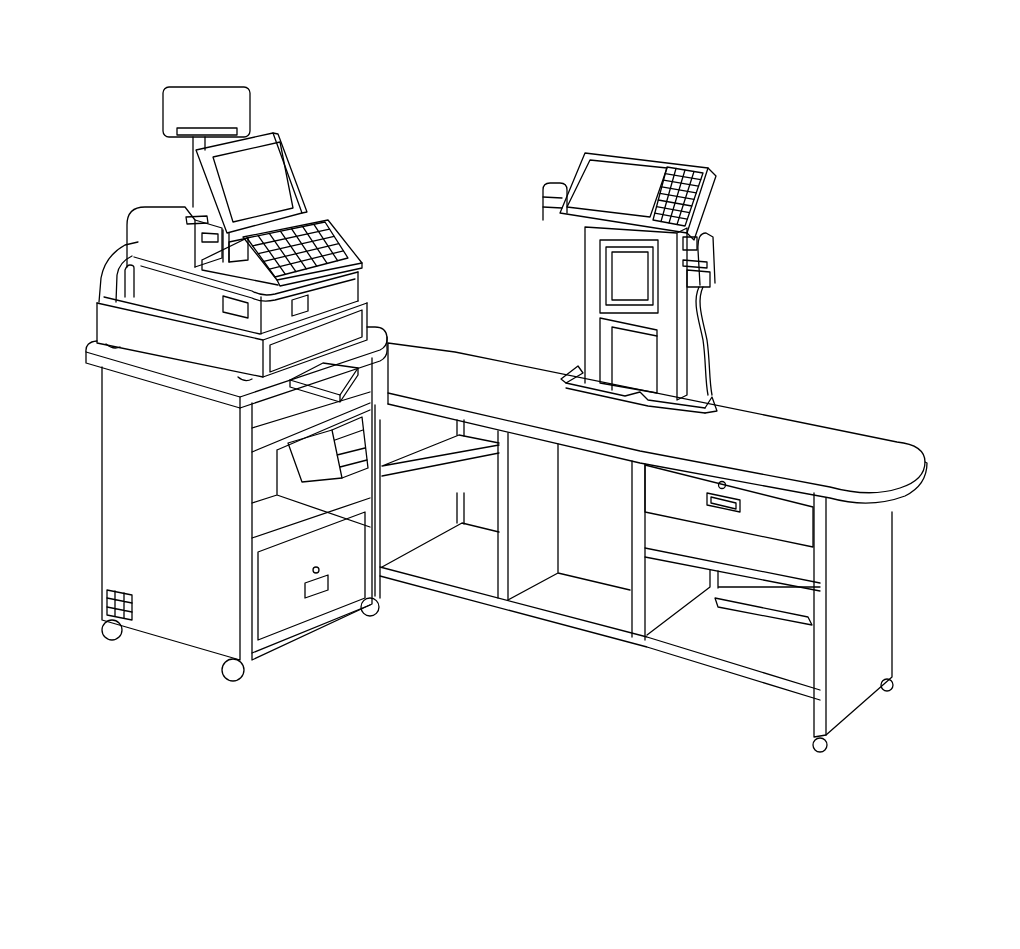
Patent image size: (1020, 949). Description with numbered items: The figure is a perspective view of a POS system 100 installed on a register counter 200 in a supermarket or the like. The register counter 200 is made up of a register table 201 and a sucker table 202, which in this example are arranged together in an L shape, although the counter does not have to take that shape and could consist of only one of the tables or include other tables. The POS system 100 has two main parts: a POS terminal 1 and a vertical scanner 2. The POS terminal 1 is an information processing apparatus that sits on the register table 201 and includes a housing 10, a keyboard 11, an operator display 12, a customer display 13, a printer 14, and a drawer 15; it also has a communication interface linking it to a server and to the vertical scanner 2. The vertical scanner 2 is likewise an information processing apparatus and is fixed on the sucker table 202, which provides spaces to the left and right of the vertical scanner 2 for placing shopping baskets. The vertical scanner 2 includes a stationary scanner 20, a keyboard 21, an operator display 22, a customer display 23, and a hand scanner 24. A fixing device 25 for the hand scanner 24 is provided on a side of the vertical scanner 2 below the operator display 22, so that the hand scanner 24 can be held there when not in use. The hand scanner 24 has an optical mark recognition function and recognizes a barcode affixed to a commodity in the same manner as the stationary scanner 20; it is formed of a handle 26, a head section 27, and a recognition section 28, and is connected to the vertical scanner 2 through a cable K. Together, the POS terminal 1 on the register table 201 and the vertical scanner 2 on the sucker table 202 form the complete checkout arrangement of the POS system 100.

The POS system 100 is at (618, 78).
The POS terminal 1 is at (333, 220).
The housing 10 is at (117, 249).
The keyboard 11 is at (346, 238).
The operator display 12 is at (273, 155).
The customer display 13 is at (246, 95).
The printer 14 is at (160, 208).
The drawer 15 is at (374, 313).
The vertical scanner 2 is at (722, 199).
The stationary scanner 20 is at (617, 270).
The keyboard 21 is at (682, 165).
The operator display 22 is at (623, 165).
The customer display 23 is at (562, 183).
The hand scanner 24 is at (717, 267).
The fixing device 25 is at (705, 307).
The handle 26 is at (717, 280).
The head section 27 is at (713, 242).
The recognition section 28 is at (693, 232).
The cable K is at (707, 353).
The register counter 200 is at (775, 406).
The register table 201 is at (112, 507).
The sucker table 202 is at (850, 428).